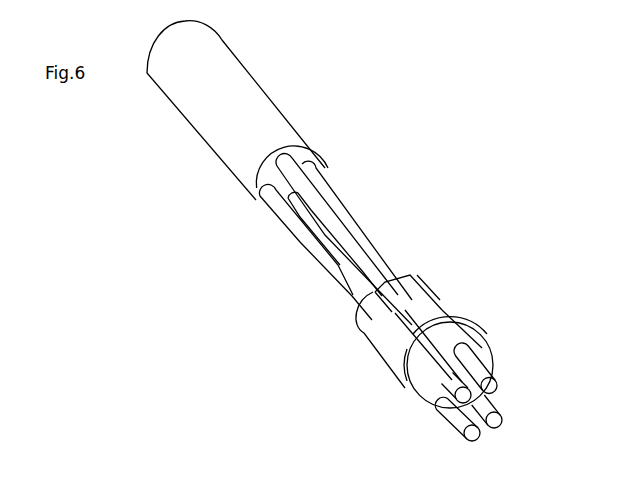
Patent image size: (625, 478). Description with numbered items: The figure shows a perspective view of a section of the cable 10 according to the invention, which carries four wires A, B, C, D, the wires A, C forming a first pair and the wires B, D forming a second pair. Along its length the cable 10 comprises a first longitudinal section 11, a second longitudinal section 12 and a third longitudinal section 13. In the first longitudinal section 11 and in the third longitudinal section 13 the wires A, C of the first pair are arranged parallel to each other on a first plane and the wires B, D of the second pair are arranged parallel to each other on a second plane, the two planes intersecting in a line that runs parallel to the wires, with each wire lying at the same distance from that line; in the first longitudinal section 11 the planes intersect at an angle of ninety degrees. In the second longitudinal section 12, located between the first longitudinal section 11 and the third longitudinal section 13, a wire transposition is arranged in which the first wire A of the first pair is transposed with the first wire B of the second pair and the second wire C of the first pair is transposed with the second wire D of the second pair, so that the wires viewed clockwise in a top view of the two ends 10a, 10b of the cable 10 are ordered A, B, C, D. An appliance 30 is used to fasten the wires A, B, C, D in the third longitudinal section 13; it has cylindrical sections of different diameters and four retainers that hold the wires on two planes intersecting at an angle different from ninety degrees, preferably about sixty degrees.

The cable 10 is at (395, 133).
The end of the cable 10a is at (200, 100).
The end of the cable 10b is at (404, 388).
The first longitudinal section 11 is at (248, 122).
The second longitudinal section 12 is at (326, 231).
The third longitudinal section 13 is at (432, 305).
The appliance 30 is at (384, 340).
The first wire of the first pair A is at (296, 172).
The first wire of the second pair B is at (275, 210).
The second wire of the first pair C is at (295, 203).
The second wire of the second pair D is at (332, 200).